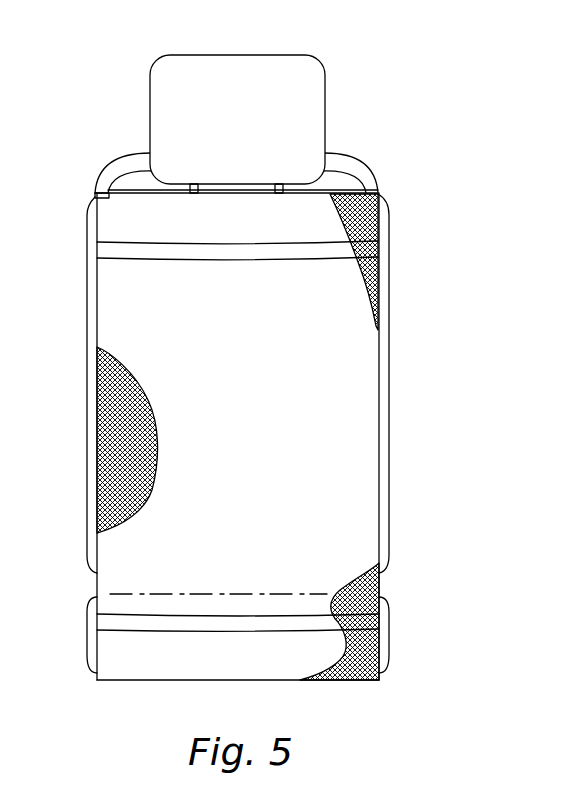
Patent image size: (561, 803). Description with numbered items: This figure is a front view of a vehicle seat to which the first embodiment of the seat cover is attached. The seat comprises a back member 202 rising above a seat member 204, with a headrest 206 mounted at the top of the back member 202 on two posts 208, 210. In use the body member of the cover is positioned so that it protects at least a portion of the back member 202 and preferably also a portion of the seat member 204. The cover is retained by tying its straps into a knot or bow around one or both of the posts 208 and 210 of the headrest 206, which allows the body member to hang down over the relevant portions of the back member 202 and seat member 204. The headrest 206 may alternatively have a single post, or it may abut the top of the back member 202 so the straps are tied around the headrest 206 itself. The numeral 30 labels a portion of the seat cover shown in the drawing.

The trim cover 30 is at (225, 429).
The back member 202 is at (390, 435).
The seat member 204 is at (390, 620).
The headrest 206 is at (256, 125).
The post 208 is at (193, 196).
The post 210 is at (280, 196).